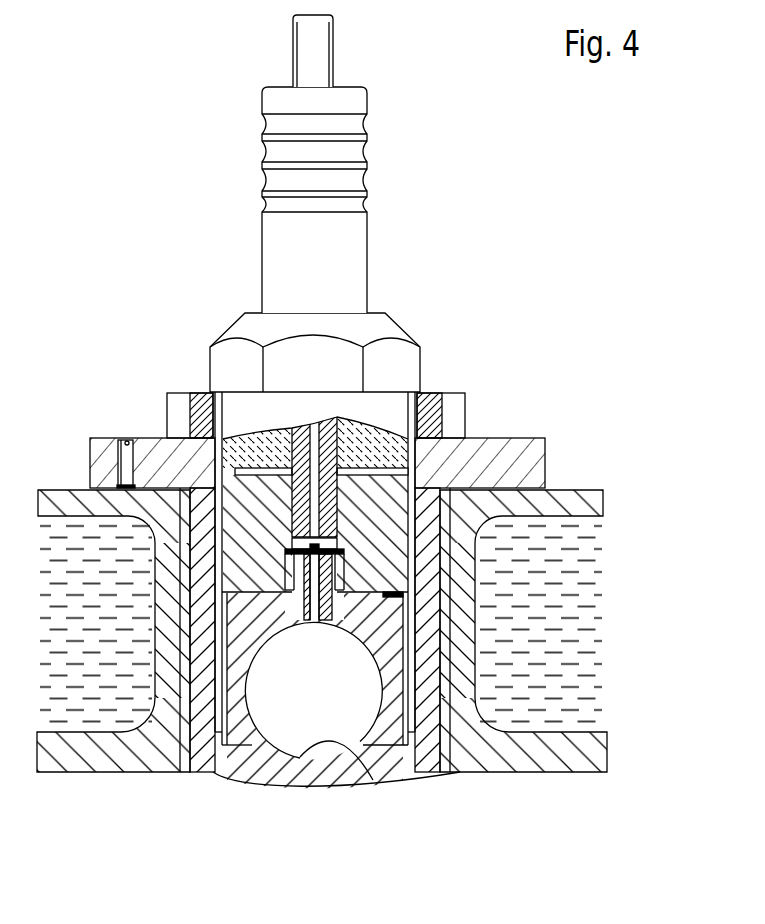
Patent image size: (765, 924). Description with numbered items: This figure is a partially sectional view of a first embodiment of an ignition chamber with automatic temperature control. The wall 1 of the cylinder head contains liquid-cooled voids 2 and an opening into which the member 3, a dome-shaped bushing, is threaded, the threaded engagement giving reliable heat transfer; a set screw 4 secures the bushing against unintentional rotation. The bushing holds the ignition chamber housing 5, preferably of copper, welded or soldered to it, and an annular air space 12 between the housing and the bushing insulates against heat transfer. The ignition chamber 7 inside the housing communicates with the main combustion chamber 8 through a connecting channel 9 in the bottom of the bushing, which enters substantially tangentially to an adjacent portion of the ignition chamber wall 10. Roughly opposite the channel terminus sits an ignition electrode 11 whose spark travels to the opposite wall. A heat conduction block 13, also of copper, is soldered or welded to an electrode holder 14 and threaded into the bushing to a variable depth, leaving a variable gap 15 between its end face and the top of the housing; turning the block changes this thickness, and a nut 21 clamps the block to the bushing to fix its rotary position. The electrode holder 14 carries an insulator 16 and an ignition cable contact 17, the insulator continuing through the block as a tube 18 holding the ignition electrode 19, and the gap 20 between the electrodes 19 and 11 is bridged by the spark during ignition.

The wall 1 is at (68, 755).
The liquid-cooled voids 2 is at (107, 713).
The member 3 is at (515, 460).
The set screw 4 is at (127, 458).
The ignition chamber housing 5 is at (383, 622).
The ignition chamber 7 is at (278, 686).
The main combustion chamber 8 is at (229, 864).
The connecting channel 9 is at (307, 770).
The ignition chamber wall 10 is at (377, 672).
The ignition electrode 11 is at (456, 735).
The annular air space 12 is at (408, 650).
The heat conduction block 13 is at (382, 522).
The electrode holder 14 is at (325, 363).
The gap 15 is at (385, 597).
The insulator 16 is at (329, 257).
The ignition cable contact 17 is at (312, 51).
The tube 18 is at (304, 500).
The ignition electrode 19 is at (322, 532).
The gap 20 is at (300, 552).
The nut 21 is at (450, 413).